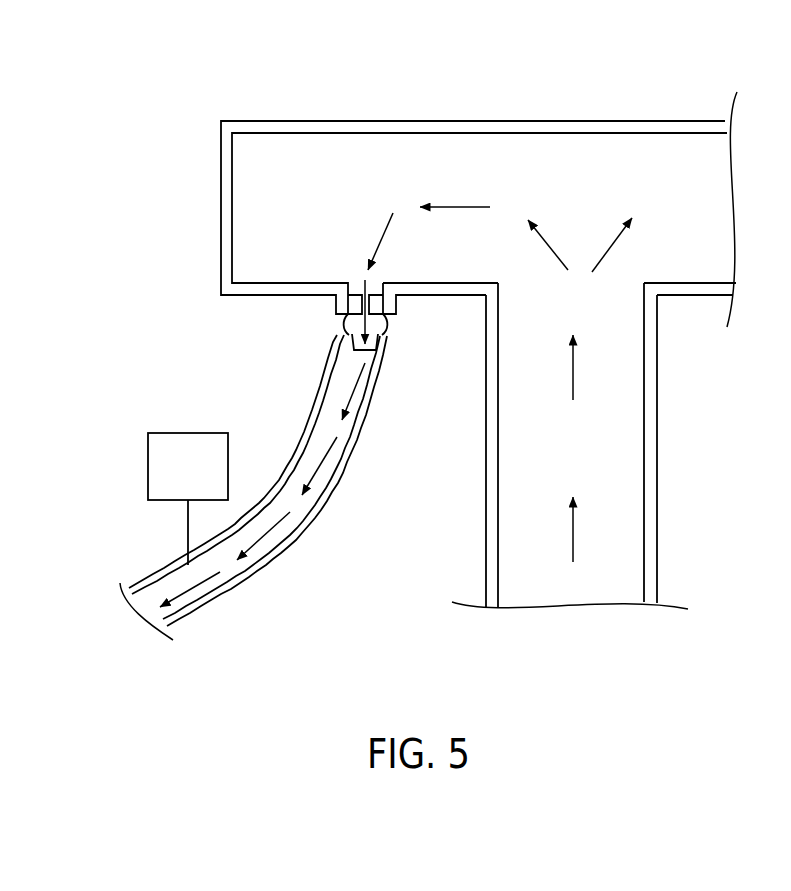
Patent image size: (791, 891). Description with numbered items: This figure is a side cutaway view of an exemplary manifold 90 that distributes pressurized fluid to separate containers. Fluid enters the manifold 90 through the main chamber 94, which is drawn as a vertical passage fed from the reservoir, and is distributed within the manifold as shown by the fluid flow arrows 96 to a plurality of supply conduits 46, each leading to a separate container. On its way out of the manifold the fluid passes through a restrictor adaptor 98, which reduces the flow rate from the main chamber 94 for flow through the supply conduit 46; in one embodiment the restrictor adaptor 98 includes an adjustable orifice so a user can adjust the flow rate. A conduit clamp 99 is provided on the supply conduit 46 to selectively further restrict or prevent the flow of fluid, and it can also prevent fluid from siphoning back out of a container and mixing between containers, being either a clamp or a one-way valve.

The manifold 90 is at (632, 86).
The main chamber 94 is at (657, 445).
The fluid flow arrows 96 is at (612, 245).
The restrictor adaptor 98 is at (385, 318).
The supply conduit 46 is at (192, 620).
The conduit clamp 99 is at (190, 432).